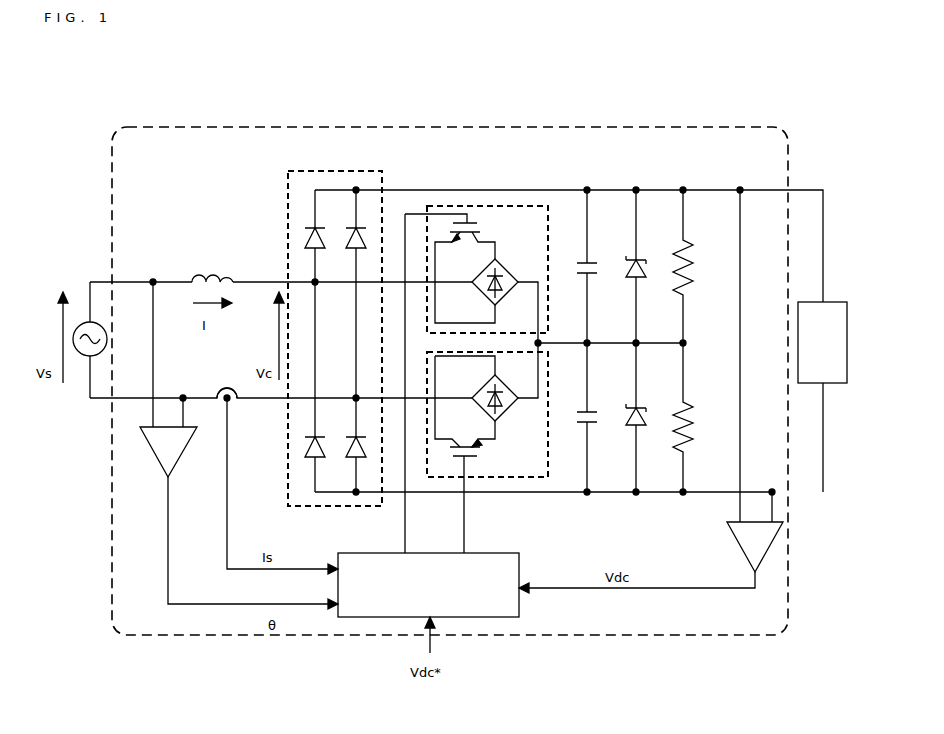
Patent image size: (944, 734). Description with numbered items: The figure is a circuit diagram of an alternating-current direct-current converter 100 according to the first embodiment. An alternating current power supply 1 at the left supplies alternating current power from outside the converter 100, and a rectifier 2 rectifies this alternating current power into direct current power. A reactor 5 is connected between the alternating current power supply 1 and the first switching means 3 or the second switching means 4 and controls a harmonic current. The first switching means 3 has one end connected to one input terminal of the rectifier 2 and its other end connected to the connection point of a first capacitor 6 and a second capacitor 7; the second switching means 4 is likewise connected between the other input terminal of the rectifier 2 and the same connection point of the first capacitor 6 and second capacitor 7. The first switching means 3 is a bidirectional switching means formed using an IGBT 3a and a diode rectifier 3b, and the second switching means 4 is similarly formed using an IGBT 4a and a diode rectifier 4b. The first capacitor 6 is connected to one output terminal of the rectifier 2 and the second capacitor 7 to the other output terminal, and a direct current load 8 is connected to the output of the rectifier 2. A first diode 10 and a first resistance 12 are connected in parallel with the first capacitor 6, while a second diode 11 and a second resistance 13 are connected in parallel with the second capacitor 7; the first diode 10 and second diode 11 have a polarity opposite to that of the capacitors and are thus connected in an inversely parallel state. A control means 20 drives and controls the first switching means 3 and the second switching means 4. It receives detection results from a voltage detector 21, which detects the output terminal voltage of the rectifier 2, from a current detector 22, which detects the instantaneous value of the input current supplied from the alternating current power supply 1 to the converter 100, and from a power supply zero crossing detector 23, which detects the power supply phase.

The alternating-current direct-current converter 100 is at (790, 178).
The alternating current power supply 1 is at (100, 322).
The reactor 5 is at (202, 262).
The rectifier 2 is at (298, 170).
The first switching means 3 is at (520, 190).
The IGBT 3a is at (464, 219).
The diode rectifier 3b is at (502, 264).
The second switching means 4 is at (510, 479).
The IGBT 4a is at (468, 474).
The diode rectifier 4b is at (498, 416).
The first capacitor 6 is at (588, 258).
The second capacitor 7 is at (589, 408).
The first diode 10 is at (639, 256).
The second diode 11 is at (642, 406).
The first resistance 12 is at (686, 248).
The second resistance 13 is at (687, 406).
The direct current load 8 is at (814, 302).
The control means 20 is at (517, 580).
The voltage detector 21 is at (735, 537).
The current detector 22 is at (232, 402).
The power supply zero crossing detector 23 is at (178, 470).